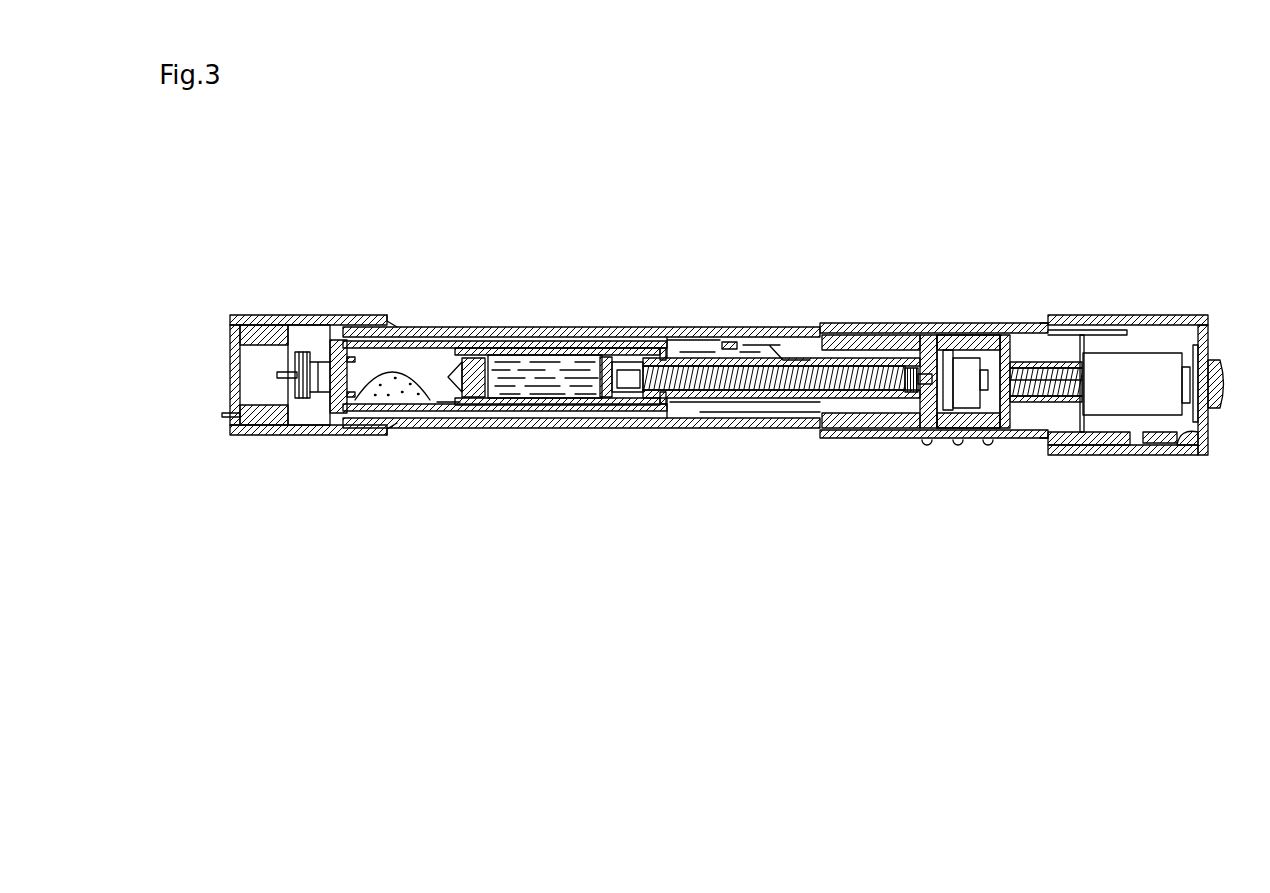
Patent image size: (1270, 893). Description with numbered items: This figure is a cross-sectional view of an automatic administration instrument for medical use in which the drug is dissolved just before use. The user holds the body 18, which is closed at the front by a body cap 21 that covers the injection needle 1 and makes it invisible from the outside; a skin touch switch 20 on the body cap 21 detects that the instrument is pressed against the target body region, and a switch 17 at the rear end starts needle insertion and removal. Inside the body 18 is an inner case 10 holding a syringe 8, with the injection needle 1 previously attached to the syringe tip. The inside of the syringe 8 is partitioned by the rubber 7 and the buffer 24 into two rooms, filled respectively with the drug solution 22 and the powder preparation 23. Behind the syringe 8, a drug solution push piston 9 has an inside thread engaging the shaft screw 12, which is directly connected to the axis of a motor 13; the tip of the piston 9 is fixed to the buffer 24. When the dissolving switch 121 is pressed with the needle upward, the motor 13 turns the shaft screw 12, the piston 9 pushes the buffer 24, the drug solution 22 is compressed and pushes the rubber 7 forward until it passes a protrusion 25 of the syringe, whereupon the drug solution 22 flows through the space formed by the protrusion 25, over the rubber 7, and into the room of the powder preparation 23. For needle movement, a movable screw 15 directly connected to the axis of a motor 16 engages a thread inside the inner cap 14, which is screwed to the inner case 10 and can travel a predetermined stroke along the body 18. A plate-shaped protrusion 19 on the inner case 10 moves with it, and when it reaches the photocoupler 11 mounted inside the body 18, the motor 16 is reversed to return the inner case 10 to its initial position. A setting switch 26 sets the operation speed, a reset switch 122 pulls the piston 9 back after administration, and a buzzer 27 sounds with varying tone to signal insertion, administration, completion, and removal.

The injection needle 1 is at (277, 375).
The rubber 7 is at (480, 425).
The syringe 8 is at (553, 420).
The drug solution push piston 9 is at (853, 399).
The inner case 10 is at (691, 357).
The photocoupler 11 is at (728, 341).
The shaft screw 12 is at (878, 366).
The motor 13 is at (962, 366).
The inner cap 14 is at (1027, 362).
The movable screw 15 is at (1063, 393).
The motor 16 is at (1142, 360).
The switch 17 is at (1222, 360).
The body 18 is at (733, 430).
The plate-shaped protrusion 19 is at (762, 344).
The skin touch switch 20 is at (224, 418).
The body cap 21 is at (325, 437).
The drug solution 22 is at (585, 385).
The powder preparation 23 is at (410, 383).
The buffer 24 is at (611, 348).
The protrusion 25 is at (445, 404).
The setting switch 26 is at (927, 445).
The buzzer 27 is at (1198, 435).
The dissolving switch 121 is at (958, 446).
The reset switch 122 is at (988, 446).